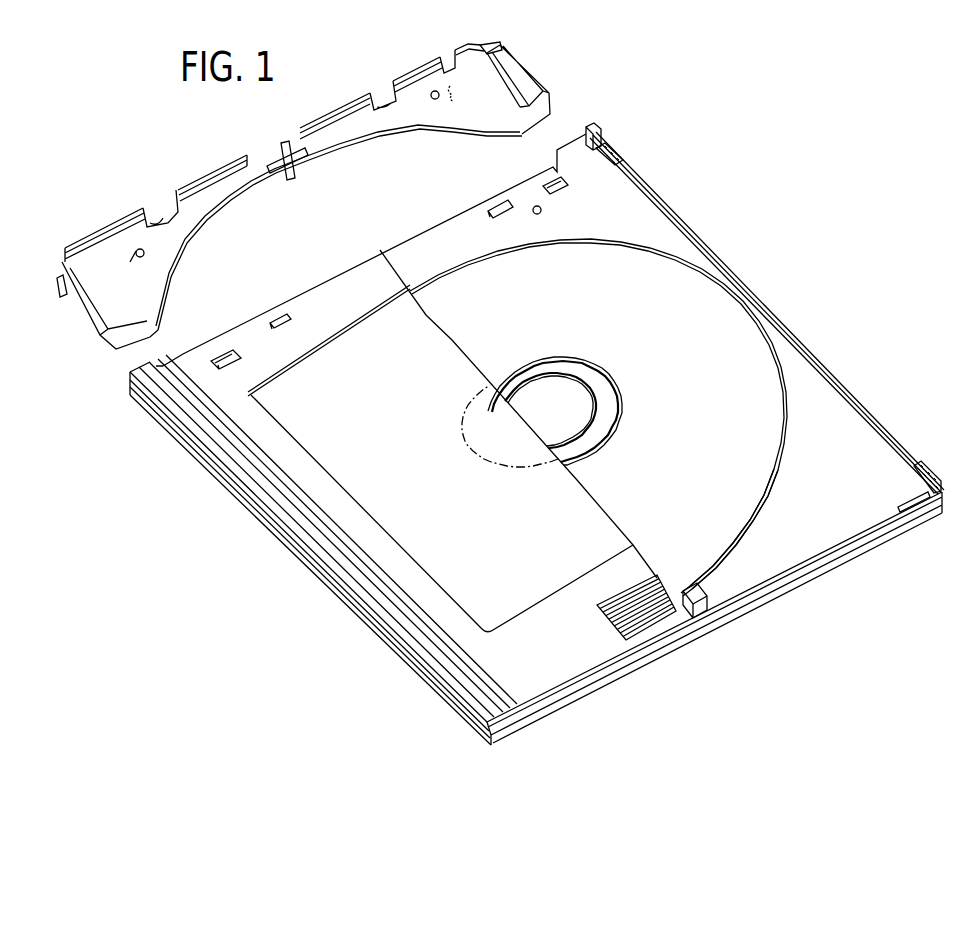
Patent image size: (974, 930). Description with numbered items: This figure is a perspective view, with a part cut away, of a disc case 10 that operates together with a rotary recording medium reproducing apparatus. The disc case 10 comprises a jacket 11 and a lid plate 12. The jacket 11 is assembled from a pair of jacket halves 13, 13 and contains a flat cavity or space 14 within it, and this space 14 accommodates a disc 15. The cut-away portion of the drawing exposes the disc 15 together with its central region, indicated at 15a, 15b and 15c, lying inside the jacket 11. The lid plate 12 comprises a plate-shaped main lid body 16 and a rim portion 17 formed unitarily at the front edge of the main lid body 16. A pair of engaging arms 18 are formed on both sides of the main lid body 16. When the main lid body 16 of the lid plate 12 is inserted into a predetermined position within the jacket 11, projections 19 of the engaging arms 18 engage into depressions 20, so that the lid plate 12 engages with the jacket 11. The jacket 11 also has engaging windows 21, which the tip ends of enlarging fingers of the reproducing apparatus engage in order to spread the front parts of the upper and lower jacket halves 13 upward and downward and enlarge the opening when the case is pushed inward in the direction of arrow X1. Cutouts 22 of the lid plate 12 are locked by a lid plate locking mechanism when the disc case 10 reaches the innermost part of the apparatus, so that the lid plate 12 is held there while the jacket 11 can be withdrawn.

The disc case 10 is at (637, 140).
The jacket 11 is at (331, 603).
The lid plate 12 is at (200, 173).
The jacket halves 13 is at (838, 552).
The flat cavity or space 14 is at (850, 412).
The disc 15 is at (766, 455).
The center hole of disc 15a is at (566, 403).
The peripheral edge of disc 15b is at (752, 526).
The hub ring of disc 15c is at (607, 434).
The main lid body 16 is at (371, 132).
The rim portion 17 is at (325, 120).
The engaging arms 18 is at (86, 326).
The projections 19 is at (502, 47).
The depressions 20 is at (598, 158).
The engaging windows 21 is at (278, 312).
The cutouts 22 is at (163, 210).